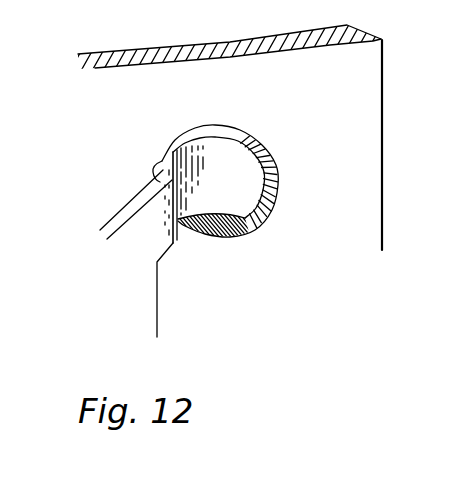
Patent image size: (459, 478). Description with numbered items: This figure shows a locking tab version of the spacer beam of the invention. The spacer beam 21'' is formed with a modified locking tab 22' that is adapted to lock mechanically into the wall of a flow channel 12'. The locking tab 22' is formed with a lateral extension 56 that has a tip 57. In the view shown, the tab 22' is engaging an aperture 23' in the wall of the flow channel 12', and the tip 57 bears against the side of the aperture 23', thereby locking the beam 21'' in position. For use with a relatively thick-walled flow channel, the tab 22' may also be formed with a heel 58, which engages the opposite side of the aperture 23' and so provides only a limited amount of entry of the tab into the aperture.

The flow channel 12' is at (222, 127).
The aperture 23' is at (238, 165).
The lateral extension 56 is at (257, 138).
The tip 57 is at (278, 182).
The heel 58 is at (155, 168).
The spacer beam 21'' is at (99, 207).
The locking tab 22' is at (192, 290).